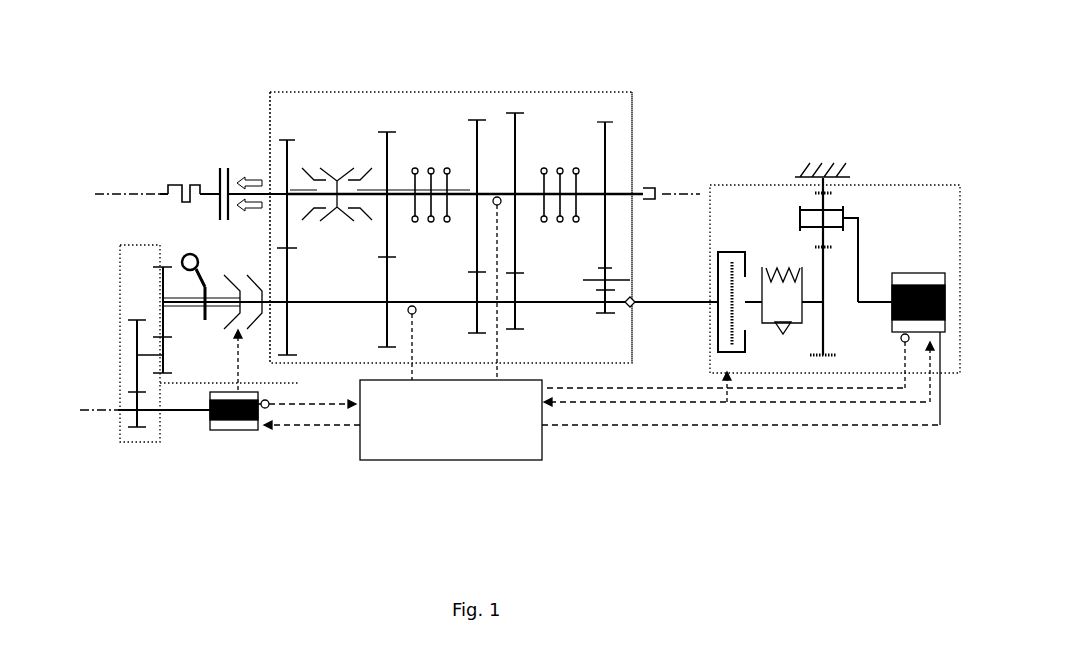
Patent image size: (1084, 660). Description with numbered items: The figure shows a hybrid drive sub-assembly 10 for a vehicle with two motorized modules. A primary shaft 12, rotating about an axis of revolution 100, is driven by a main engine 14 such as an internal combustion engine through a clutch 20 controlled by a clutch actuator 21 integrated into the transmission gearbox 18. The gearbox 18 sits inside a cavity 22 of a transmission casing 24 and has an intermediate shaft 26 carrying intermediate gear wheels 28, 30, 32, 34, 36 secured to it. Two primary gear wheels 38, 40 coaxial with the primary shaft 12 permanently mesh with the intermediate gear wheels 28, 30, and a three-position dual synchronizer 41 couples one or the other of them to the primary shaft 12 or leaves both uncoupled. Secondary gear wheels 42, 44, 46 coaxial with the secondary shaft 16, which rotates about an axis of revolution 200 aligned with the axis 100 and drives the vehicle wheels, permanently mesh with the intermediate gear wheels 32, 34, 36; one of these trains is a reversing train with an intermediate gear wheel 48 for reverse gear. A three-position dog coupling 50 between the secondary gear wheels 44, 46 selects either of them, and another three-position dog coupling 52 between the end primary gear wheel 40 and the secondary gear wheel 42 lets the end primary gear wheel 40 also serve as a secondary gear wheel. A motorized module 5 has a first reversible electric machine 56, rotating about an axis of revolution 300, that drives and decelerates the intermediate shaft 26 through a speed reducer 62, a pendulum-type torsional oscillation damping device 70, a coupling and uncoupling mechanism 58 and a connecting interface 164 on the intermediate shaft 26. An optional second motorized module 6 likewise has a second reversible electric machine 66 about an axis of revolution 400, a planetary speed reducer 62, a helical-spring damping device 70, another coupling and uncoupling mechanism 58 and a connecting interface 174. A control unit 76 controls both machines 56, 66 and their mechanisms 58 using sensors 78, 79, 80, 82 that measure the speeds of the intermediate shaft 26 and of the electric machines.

The hybrid drive sub-assembly 10 is at (745, 74).
The axis of revolution 100 is at (103, 185).
The main engine 14 is at (172, 183).
The clutch 20 is at (218, 170).
The clutch actuator 21 is at (243, 176).
The primary shaft 12 is at (268, 140).
The cavity 22 is at (333, 110).
The transmission casing 24 is at (590, 90).
The transmission gearbox 18 is at (632, 88).
The primary gear wheel 38 is at (300, 140).
The three-position dual synchronizer 41 is at (337, 142).
The end primary gear wheel 40 is at (395, 140).
The three-position dog coupling 52 is at (426, 140).
The secondary gear wheel 42 is at (488, 128).
The secondary gear wheel 44 is at (521, 130).
The three-position dog coupling 50 is at (553, 140).
The secondary gear wheel 46 is at (607, 138).
The intermediate gear wheel 48 is at (617, 273).
The secondary shaft 16 is at (620, 192).
The sensor 79 is at (497, 197).
The intermediate shaft 26 is at (350, 300).
The sensor 78 is at (414, 306).
The intermediate gear wheel 28 is at (289, 344).
The intermediate gear wheel 30 is at (385, 325).
The intermediate gear wheel 32 is at (472, 318).
The intermediate gear wheel 34 is at (518, 322).
The intermediate gear wheel 36 is at (598, 306).
The connecting interface 174 is at (634, 306).
The connecting interface 164 is at (272, 302).
The torsional oscillation damping device 70 is at (182, 258).
The speed reducer 62 is at (128, 340).
The axis of revolution 300 is at (90, 413).
The motorized module 5 is at (127, 454).
The coupling and uncoupling mechanism 58 is at (237, 322).
The first reversible electric machine 56 is at (215, 432).
The sensor 80 is at (264, 410).
The control unit 76 is at (540, 447).
The axis of revolution 200 is at (690, 184).
The second motorized module 6 is at (939, 185).
The axis of revolution 400 is at (872, 298).
The sensor 82 is at (901, 340).
The second reversible electric machine 66 is at (940, 430).